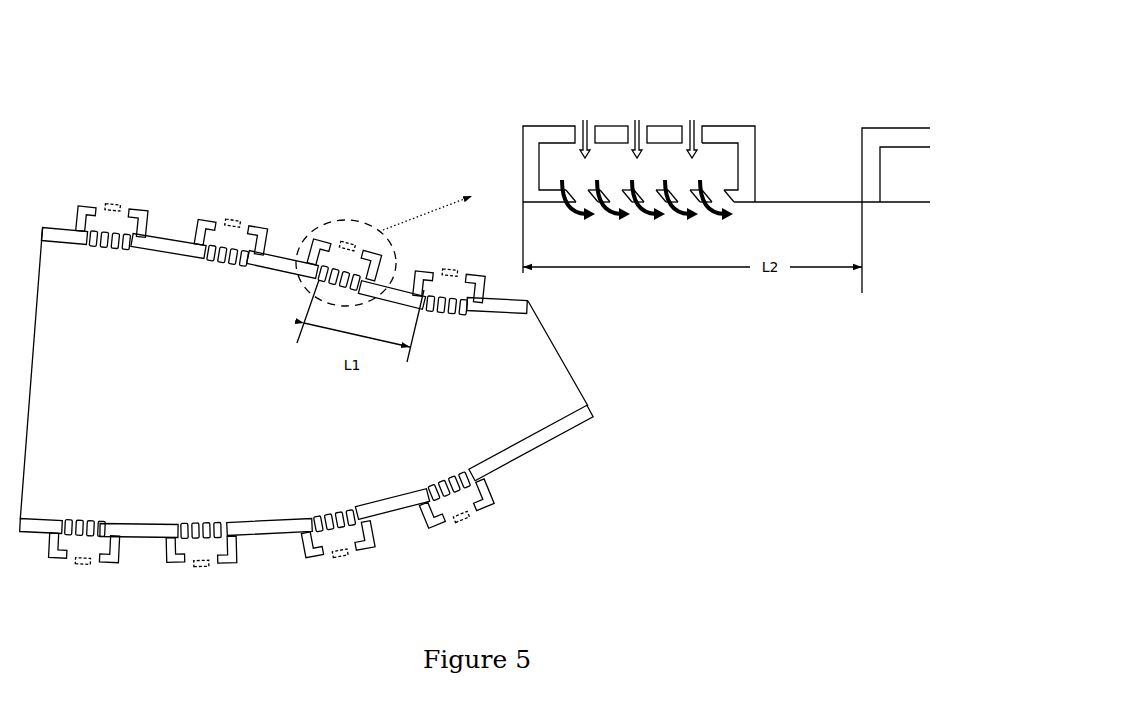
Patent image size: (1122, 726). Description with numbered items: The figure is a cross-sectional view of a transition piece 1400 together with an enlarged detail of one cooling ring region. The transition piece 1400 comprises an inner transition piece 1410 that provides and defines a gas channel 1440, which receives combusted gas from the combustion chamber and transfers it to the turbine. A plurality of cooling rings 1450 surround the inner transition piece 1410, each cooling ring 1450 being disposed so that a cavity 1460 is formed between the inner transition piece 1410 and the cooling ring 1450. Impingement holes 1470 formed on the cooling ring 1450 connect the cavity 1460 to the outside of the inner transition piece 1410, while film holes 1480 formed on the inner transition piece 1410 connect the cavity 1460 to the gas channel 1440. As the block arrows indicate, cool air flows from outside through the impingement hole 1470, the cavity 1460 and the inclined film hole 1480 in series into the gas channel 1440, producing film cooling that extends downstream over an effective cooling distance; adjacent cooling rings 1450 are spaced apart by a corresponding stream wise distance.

The transition piece 1400 is at (105, 73).
The inner transition piece 1410 is at (160, 244).
The gas channel 1440 is at (280, 473).
The cooling ring 1450 is at (195, 206).
The cavity 1460 is at (256, 240).
The impingement hole 1470 is at (218, 216).
The film hole 1480 is at (206, 263).